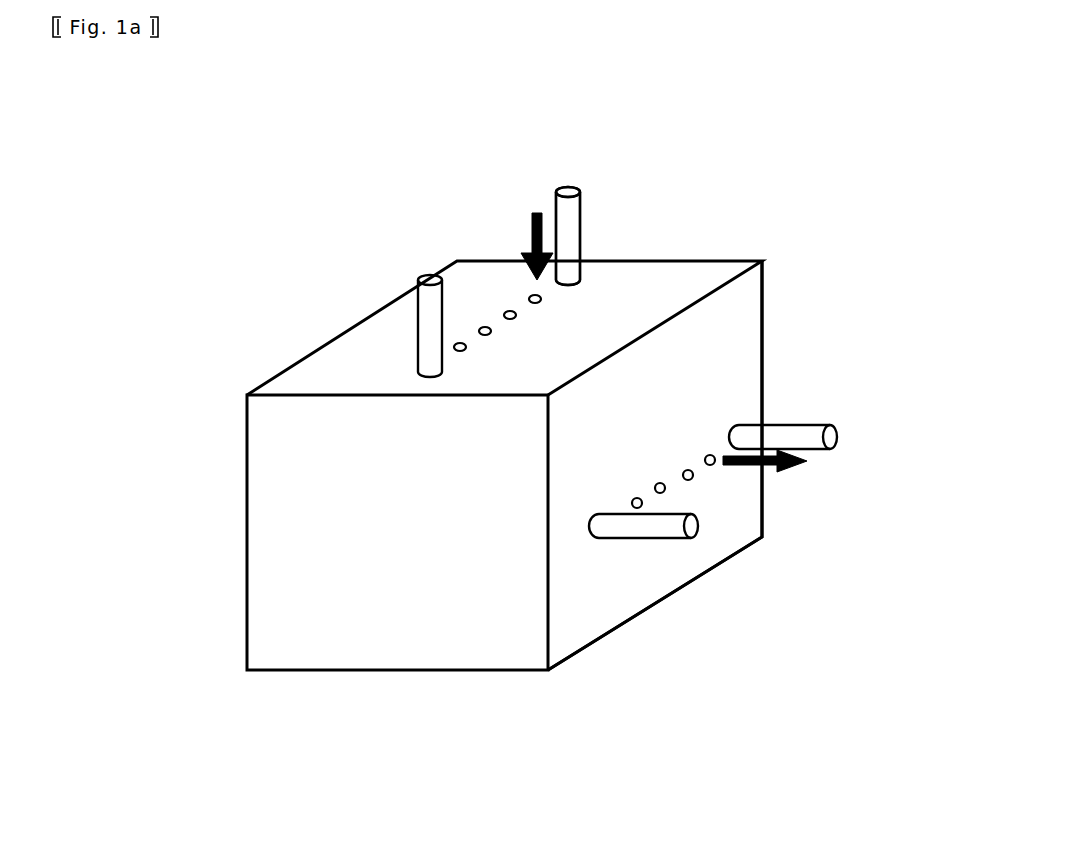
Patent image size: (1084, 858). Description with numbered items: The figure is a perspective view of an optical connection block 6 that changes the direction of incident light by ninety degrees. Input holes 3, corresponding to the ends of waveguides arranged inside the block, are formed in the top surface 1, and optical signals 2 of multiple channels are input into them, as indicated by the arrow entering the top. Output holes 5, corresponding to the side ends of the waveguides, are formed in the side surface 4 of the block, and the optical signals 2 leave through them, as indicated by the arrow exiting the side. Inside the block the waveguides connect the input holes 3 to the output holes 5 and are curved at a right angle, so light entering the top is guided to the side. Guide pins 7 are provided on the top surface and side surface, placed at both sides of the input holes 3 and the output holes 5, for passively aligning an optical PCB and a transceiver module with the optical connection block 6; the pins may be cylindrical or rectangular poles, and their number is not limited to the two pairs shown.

The top surface 1 is at (355, 355).
The optical signals 2 is at (535, 205).
The input holes 3 is at (508, 297).
The side surface 4 is at (733, 357).
The output holes 5 is at (717, 475).
The optical connection block 6 is at (602, 199).
The guide pins 7 is at (425, 272).